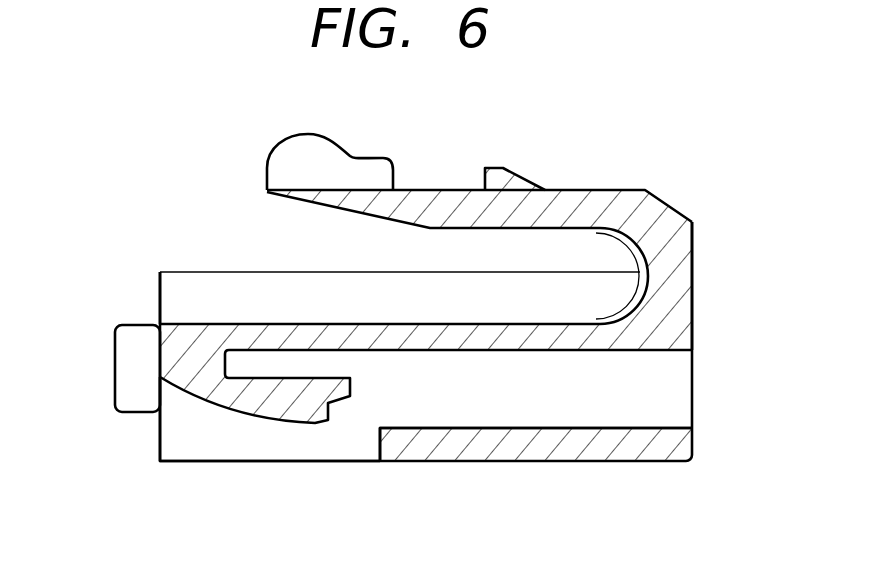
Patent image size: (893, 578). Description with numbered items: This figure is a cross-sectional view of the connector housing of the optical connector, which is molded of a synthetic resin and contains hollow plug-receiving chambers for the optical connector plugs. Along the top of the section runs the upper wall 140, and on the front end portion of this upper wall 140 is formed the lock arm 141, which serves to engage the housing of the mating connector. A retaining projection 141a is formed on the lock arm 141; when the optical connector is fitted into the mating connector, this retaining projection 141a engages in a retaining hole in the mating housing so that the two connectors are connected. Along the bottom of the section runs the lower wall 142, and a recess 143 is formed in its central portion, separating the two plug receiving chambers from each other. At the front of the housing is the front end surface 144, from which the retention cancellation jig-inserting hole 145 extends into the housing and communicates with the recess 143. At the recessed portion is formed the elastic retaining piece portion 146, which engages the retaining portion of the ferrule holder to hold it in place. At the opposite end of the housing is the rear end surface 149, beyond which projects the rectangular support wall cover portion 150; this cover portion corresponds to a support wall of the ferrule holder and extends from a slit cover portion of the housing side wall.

The upper wall 140 is at (225, 271).
The lock arm 141 is at (435, 190).
The retaining projection 141a is at (515, 181).
The lower wall 142 is at (535, 455).
The recess 143 is at (192, 442).
The front end surface 144 is at (686, 310).
The retention cancellation jig-inserting hole 145 is at (686, 412).
The elastic retaining piece portion 146 is at (283, 412).
The rear end surface 149 is at (160, 297).
The support wall cover portion 150 is at (125, 384).